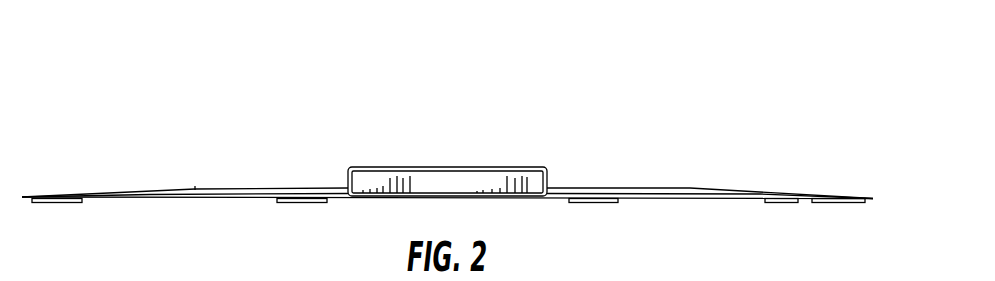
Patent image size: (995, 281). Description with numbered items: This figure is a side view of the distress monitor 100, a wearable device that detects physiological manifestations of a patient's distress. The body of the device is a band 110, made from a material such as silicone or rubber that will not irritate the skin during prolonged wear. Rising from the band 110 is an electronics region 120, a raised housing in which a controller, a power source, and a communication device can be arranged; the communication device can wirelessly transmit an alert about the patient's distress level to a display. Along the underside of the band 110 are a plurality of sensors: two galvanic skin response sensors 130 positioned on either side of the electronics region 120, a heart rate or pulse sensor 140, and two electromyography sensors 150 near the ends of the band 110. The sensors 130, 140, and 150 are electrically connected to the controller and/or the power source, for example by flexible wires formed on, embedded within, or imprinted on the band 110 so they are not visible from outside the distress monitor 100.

The distress monitor 100 is at (620, 123).
The band 110 is at (687, 187).
The electronics region 120 is at (483, 167).
The galvanic skin response sensors 130 is at (310, 203).
The heart rate sensor 140 is at (783, 203).
The electromyography sensors 150 is at (65, 203).